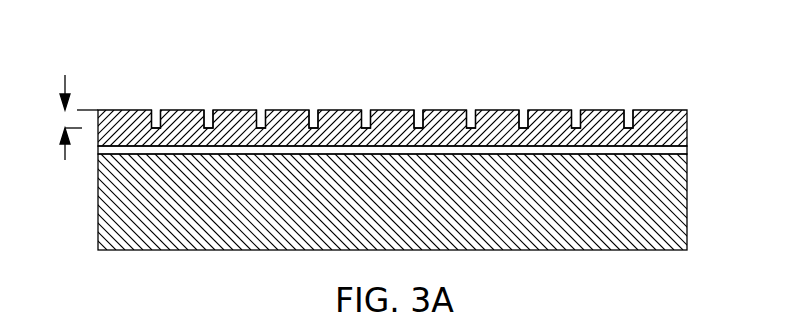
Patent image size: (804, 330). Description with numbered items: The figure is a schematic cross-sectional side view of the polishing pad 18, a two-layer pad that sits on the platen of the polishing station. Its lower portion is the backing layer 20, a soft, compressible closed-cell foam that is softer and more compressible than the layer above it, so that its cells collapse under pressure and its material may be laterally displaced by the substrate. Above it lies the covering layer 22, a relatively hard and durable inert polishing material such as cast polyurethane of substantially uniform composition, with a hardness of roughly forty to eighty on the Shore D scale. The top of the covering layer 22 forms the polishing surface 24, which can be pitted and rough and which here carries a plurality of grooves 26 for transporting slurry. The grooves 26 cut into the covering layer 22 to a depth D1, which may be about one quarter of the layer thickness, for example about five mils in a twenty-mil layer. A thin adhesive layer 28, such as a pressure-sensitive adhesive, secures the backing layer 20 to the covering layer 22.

The polishing pad 18 is at (397, 129).
The backing layer 20 is at (688, 203).
The covering layer 22 is at (687, 130).
The polishing surface 24 is at (413, 91).
The grooves 26 is at (418, 110).
The adhesive layer 28 is at (687, 150).
The depth D1 is at (61, 117).